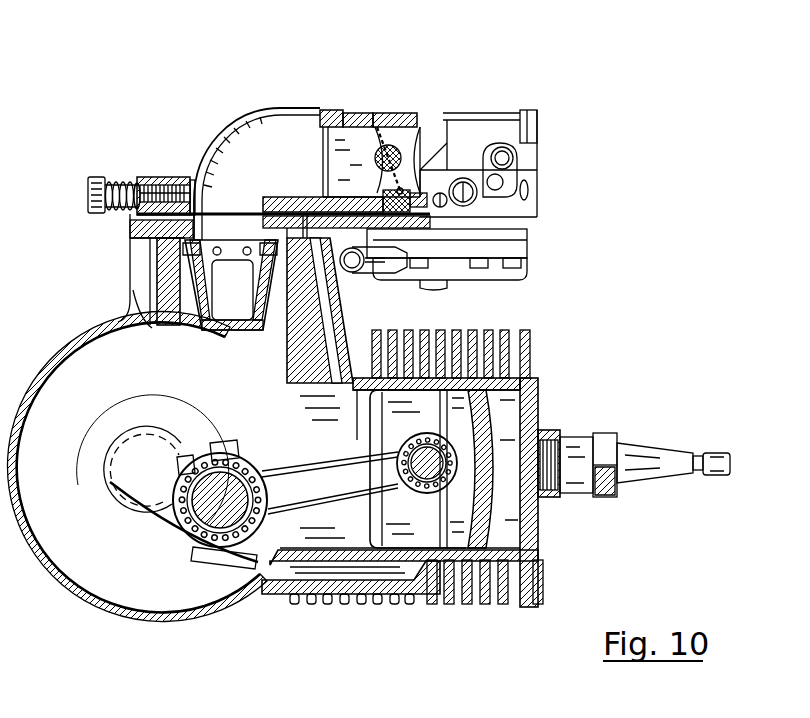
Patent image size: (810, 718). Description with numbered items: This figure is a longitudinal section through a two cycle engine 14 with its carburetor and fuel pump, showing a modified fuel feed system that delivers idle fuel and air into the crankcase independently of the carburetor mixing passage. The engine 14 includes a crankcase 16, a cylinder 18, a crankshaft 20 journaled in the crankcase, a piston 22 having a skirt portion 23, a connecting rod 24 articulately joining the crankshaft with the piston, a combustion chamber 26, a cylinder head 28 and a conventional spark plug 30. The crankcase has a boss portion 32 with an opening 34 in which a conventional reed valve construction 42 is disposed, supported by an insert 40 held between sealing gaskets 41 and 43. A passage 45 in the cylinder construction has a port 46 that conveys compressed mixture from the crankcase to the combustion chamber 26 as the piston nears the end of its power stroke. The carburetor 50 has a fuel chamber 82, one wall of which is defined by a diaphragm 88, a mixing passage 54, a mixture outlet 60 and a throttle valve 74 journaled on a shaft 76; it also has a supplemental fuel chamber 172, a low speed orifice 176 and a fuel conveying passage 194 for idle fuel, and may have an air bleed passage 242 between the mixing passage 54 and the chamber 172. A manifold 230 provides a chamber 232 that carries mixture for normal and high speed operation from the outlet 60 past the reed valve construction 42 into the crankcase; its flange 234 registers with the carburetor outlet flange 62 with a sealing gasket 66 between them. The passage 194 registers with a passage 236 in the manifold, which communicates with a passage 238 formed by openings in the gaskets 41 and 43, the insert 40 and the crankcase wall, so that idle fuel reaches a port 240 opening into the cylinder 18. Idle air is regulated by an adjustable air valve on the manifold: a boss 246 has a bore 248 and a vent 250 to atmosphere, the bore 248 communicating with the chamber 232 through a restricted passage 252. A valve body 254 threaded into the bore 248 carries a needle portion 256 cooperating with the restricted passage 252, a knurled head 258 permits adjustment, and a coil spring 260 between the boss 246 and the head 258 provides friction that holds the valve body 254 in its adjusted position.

The engine 14 is at (540, 324).
The crankcase 16 is at (73, 601).
The cylinder 18 is at (540, 367).
The crankshaft 20 is at (128, 517).
The piston 22 is at (507, 498).
The skirt portion 23 is at (418, 436).
The connecting rod 24 is at (320, 480).
The combustion chamber 26 is at (513, 502).
The cylinder head 28 is at (537, 523).
The spark plug 30 is at (663, 444).
The boss portion 32 is at (162, 283).
The opening 34 is at (186, 302).
The insert 40 is at (150, 247).
The sealing gasket 41 is at (143, 240).
The reed valve construction 42 is at (214, 334).
The sealing gasket 43 is at (152, 263).
The passage 45 is at (296, 583).
The port 46 is at (420, 553).
The carburetor 50 is at (546, 109).
The mixing passage 54 is at (413, 193).
The mixture outlet 60 is at (308, 118).
The outlet flange 62 is at (333, 108).
The sealing gasket 66 is at (312, 110).
The throttle valve 74 is at (397, 190).
The shaft 76 is at (418, 195).
The fuel chamber 82 is at (400, 197).
The diaphragm 88 is at (425, 215).
The supplemental fuel chamber 172 is at (377, 126).
The low speed orifice 176 is at (417, 213).
The fuel conveying passage 194 is at (330, 213).
The manifold 230 is at (233, 121).
The manifold chamber 232 is at (247, 157).
The flange 234 is at (343, 150).
The passage 236 is at (196, 192).
The passage 238 is at (327, 307).
The port 240 is at (357, 400).
The air bleed passage 242 is at (540, 167).
The boss 246 is at (135, 238).
The bore 248 is at (195, 228).
The vent 250 is at (190, 196).
The restricted passage 252 is at (196, 199).
The valve body 254 is at (135, 216).
The needle portion 256 is at (172, 193).
The knurled head 258 is at (94, 205).
The coil spring 260 is at (125, 212).